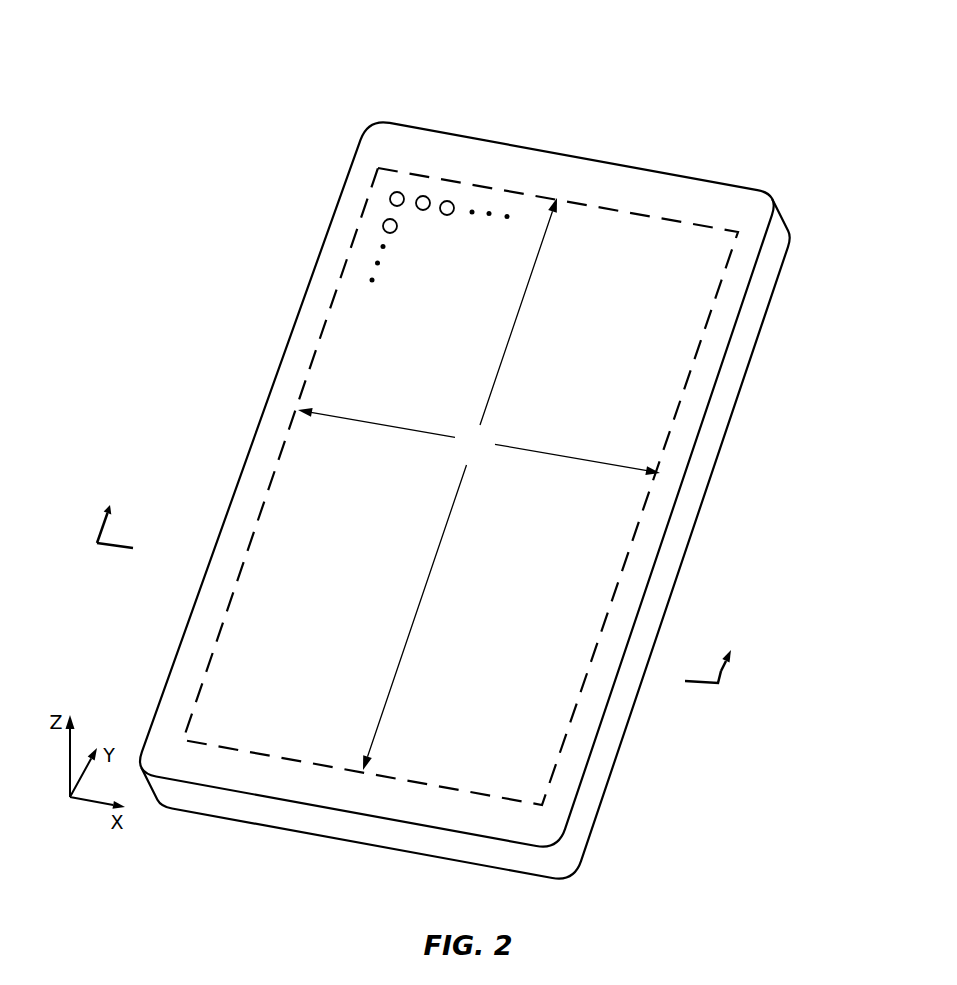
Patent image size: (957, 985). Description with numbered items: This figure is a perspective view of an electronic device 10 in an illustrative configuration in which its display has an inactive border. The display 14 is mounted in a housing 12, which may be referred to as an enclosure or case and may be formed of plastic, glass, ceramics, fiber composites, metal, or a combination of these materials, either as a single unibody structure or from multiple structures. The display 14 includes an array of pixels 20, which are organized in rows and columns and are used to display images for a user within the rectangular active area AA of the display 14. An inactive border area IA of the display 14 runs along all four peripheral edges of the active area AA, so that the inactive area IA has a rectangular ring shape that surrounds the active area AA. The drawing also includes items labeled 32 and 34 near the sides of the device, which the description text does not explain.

The electronic device 10 is at (824, 65).
The housing 12 is at (790, 222).
The display 14 is at (652, 262).
The pixels 20 is at (426, 195).
The antenna 32 is at (115, 549).
The antenna signals 34 is at (103, 527).
The inactive border area IA is at (565, 177).
The active area AA is at (479, 484).